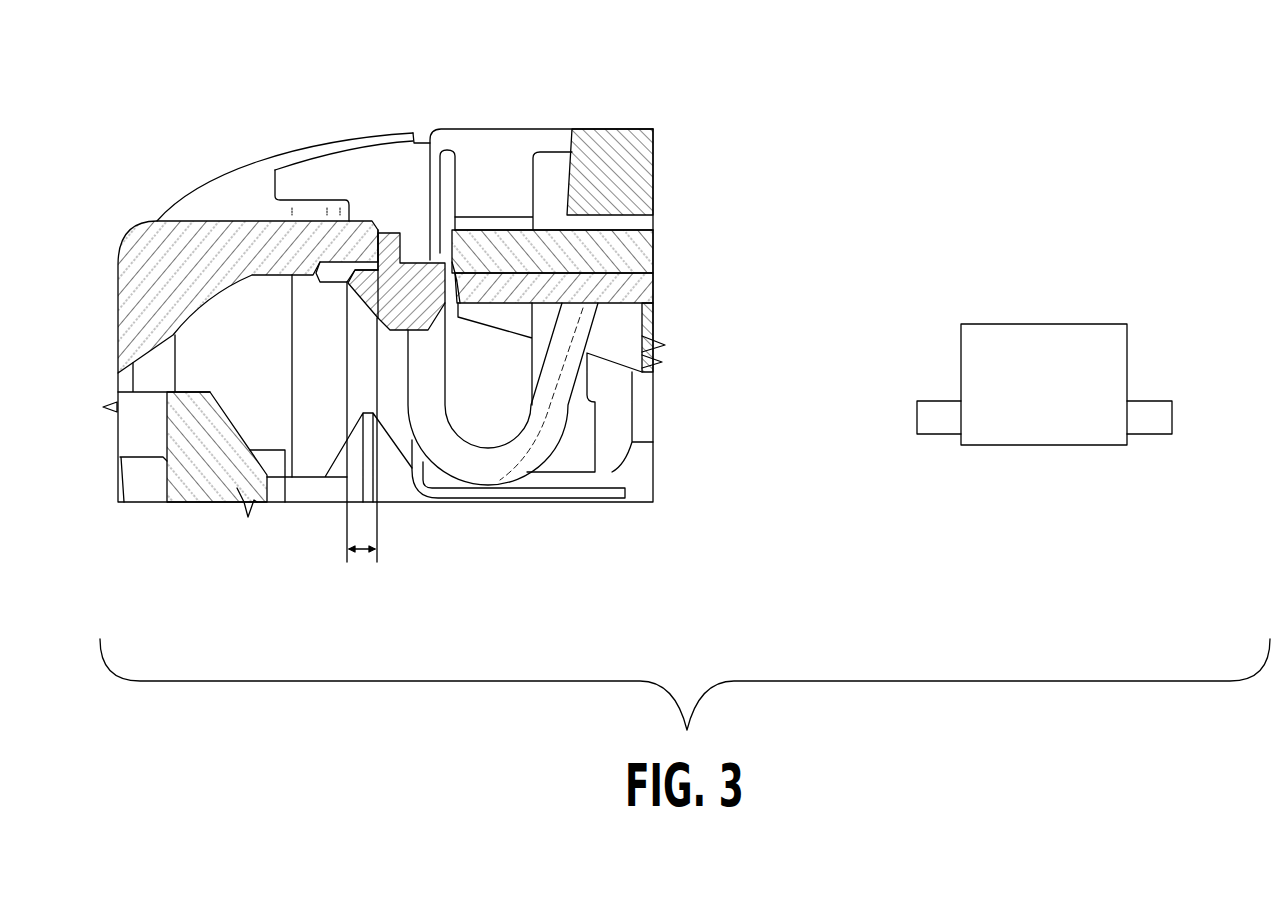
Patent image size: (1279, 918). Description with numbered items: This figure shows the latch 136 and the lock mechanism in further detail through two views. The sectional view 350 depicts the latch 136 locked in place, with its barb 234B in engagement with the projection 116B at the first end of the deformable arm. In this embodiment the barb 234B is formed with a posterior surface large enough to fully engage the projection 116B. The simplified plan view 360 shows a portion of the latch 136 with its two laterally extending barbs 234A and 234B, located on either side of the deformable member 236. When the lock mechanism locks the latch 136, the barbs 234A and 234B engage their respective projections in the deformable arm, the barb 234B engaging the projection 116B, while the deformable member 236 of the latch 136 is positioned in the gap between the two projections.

The latch 136 is at (424, 128).
The projection 116B is at (452, 258).
The barb 234B is at (434, 303).
The barb 234A is at (1172, 418).
The deformable member 236 is at (486, 486).
The view 350 is at (452, 547).
The view 360 is at (1122, 300).